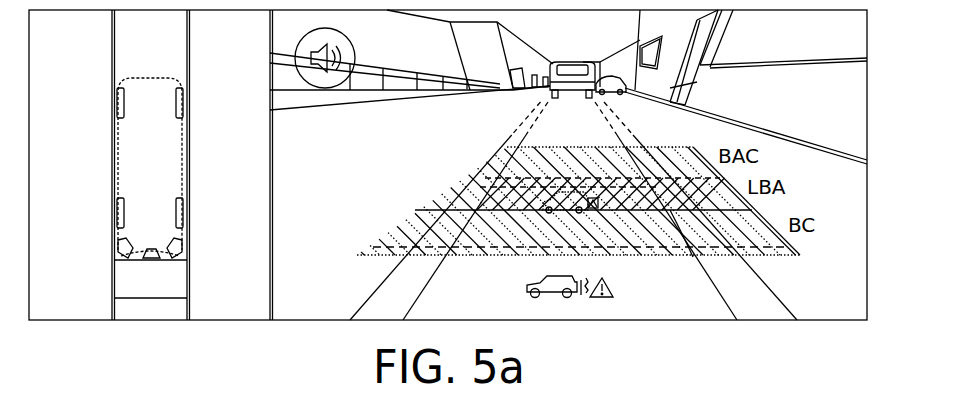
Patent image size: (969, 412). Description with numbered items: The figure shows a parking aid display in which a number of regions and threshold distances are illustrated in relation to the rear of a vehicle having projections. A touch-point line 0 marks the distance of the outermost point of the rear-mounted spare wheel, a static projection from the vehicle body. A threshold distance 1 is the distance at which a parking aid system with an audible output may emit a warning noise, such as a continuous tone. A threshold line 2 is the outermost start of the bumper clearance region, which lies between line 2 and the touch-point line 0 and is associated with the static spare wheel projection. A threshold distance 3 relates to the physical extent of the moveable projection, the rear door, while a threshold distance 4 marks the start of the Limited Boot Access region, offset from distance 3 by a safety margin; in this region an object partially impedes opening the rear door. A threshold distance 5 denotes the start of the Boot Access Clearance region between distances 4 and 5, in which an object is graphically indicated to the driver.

The touch-point line 0 is at (447, 258).
The audible warning threshold distance 1 is at (573, 241).
The bumper clearance region start threshold distance 2 is at (576, 211).
The moveable projection extent threshold distance 3 is at (563, 187).
The Limited Boot Access region start threshold distance 4 is at (473, 178).
The Boot Access Clearance region start threshold distance 5 is at (482, 163).